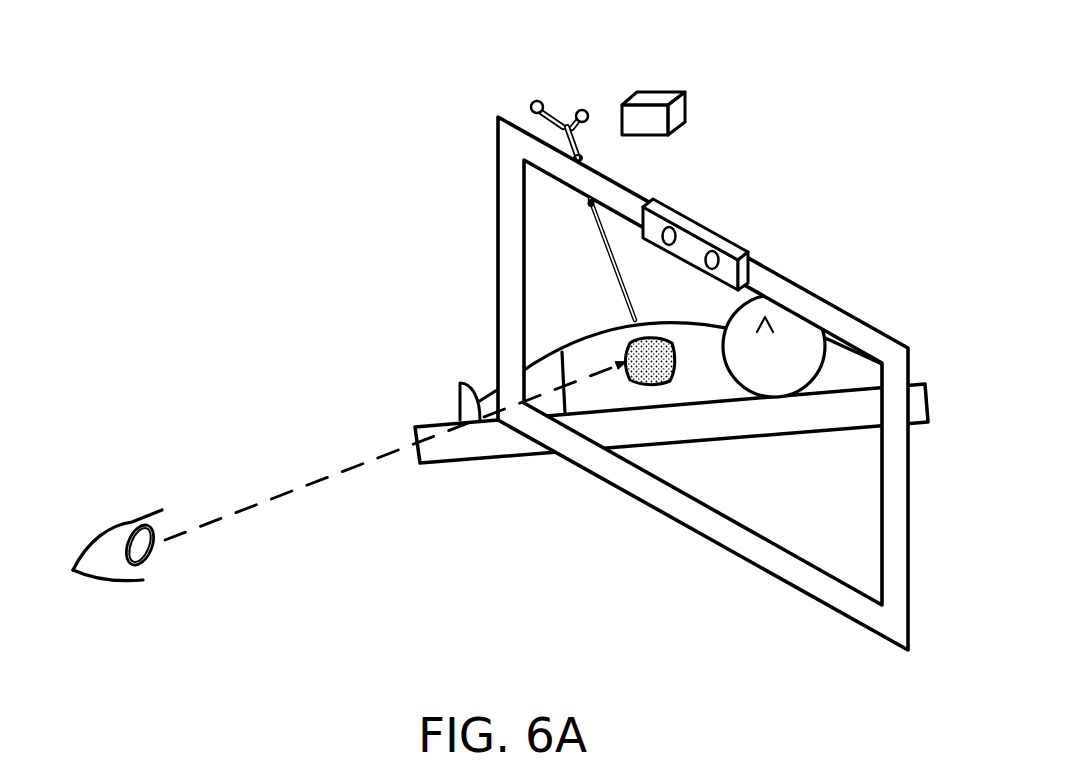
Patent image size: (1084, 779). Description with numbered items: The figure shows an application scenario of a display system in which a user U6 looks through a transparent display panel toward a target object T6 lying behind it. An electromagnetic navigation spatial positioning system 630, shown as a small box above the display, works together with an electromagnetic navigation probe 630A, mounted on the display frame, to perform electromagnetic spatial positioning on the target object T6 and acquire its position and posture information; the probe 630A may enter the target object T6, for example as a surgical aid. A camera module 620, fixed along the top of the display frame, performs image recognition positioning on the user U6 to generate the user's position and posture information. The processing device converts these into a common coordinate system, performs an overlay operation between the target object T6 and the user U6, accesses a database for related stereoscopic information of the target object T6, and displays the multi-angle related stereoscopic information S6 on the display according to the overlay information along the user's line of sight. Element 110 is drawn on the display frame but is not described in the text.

The frame 110 is at (722, 533).
The camera module 620 is at (688, 243).
The electromagnetic navigation spatial positioning system 630 is at (661, 99).
The electromagnetic navigation probe 630A is at (548, 118).
The target object T6 is at (602, 337).
The multi-angle related stereoscopic information S6 is at (650, 362).
The user U6 is at (105, 580).